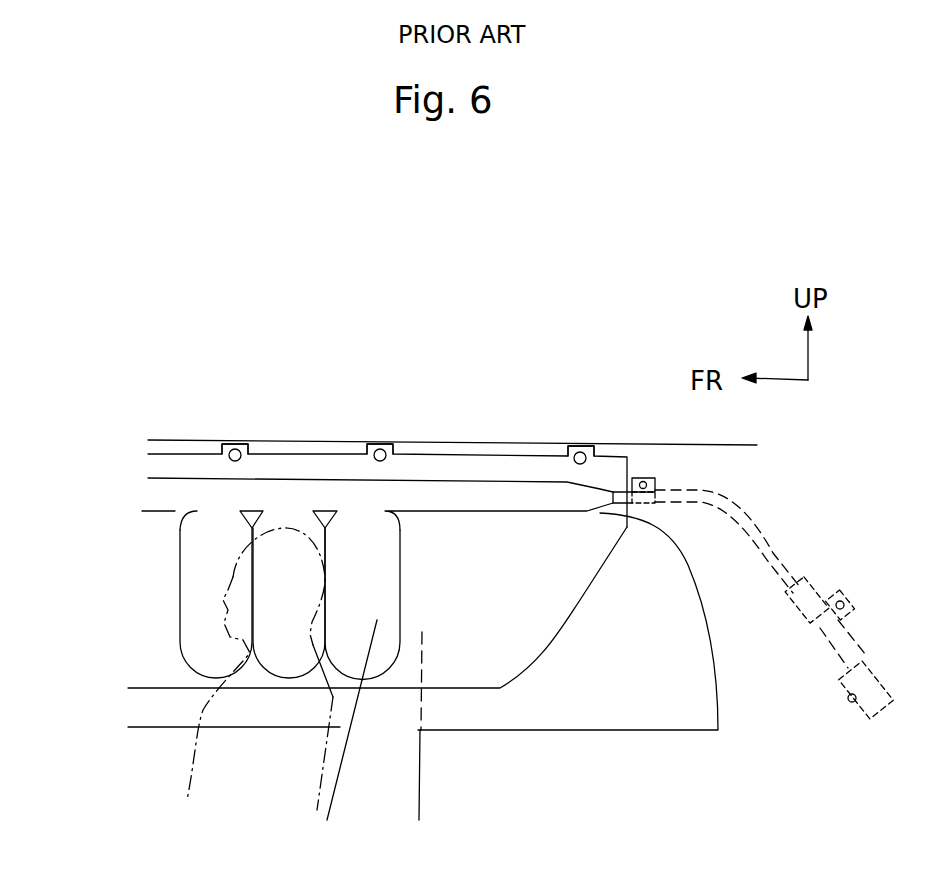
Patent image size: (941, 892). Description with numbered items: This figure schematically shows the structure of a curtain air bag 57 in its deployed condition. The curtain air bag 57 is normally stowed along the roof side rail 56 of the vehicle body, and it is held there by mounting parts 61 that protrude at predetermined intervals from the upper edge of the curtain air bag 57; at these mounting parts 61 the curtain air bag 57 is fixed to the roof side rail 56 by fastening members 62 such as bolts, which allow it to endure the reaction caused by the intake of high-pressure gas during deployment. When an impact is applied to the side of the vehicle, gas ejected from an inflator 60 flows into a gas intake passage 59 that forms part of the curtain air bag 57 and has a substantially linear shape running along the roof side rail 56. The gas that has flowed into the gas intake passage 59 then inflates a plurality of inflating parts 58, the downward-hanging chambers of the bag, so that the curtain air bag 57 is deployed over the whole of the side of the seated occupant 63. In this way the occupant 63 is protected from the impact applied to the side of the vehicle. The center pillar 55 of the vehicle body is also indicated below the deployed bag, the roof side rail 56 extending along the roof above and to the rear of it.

The center pillar 55 is at (407, 755).
The roof side rail 56 is at (462, 443).
The curtain air bag 57 is at (573, 597).
The inflating parts 58 is at (277, 658).
The gas intake passage 59 is at (507, 490).
The inflator 60 is at (867, 650).
The mounting parts 61 is at (227, 443).
The fastening members 62 is at (240, 444).
The occupant 63 is at (197, 765).